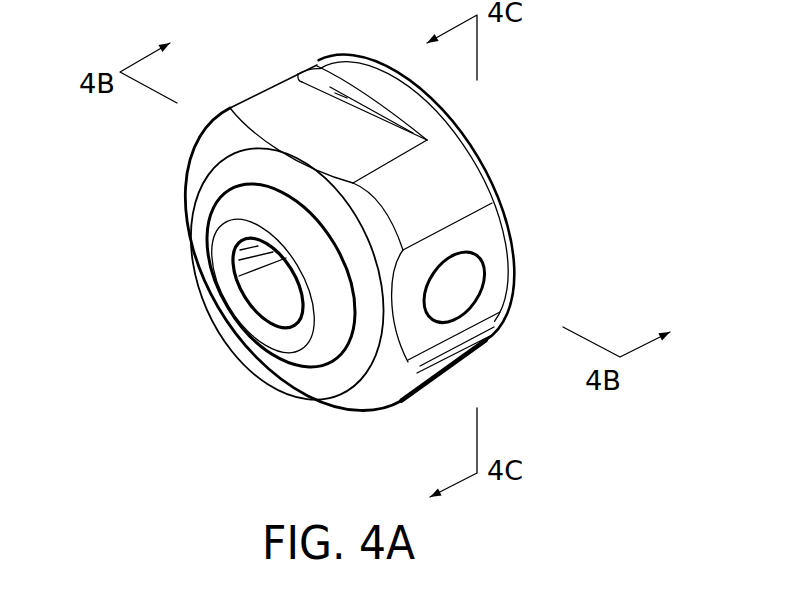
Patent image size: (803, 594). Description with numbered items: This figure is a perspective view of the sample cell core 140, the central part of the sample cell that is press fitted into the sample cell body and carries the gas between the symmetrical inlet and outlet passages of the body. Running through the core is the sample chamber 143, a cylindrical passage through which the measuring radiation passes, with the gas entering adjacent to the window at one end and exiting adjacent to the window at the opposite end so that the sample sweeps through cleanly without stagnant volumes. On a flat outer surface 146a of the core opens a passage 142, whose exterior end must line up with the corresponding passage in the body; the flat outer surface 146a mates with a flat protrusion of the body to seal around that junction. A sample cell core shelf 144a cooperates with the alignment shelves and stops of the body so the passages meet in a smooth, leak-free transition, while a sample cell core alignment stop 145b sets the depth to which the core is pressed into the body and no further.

The sample cell core 140 is at (396, 400).
The passage 142 is at (447, 290).
The sample chamber 143 is at (270, 288).
The sample cell core shelf 144a is at (260, 128).
The sample cell core alignment stop 145b is at (323, 87).
The flat outer surface 146a is at (493, 242).